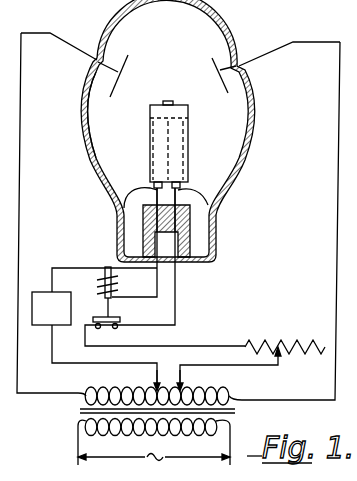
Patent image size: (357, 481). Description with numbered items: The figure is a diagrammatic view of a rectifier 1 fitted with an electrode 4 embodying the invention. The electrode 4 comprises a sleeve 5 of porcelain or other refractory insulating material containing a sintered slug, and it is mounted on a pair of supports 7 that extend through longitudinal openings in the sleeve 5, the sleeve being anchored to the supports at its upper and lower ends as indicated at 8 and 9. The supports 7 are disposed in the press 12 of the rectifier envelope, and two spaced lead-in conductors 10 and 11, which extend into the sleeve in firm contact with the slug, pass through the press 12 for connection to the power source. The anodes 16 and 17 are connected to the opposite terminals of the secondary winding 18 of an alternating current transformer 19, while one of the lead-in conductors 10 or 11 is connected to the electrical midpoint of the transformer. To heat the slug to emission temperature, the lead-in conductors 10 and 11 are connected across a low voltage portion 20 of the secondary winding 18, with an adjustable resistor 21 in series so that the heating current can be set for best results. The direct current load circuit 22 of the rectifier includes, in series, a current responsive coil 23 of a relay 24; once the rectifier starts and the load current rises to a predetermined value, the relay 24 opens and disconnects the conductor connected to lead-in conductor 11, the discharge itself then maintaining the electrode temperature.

The rectifier 1 is at (263, 150).
The electrode 4 is at (206, 133).
The sleeve 5 is at (150, 121).
The supports 7 is at (157, 199).
The anchoring point 8 is at (172, 103).
The anchoring point 9 is at (180, 185).
The lead-in conductor 10 is at (117, 206).
The lead-in conductor 11 is at (180, 202).
The press 12 is at (190, 222).
The anode 16 is at (215, 62).
The anode 17 is at (110, 86).
The secondary winding 18 is at (140, 390).
The alternating current transformer 19 is at (64, 420).
The low voltage portion 20 is at (181, 376).
The adjustable resistor 21 is at (287, 340).
The direct current load circuit 22 is at (61, 315).
The current responsive coil 23 is at (113, 279).
The relay 24 is at (143, 315).